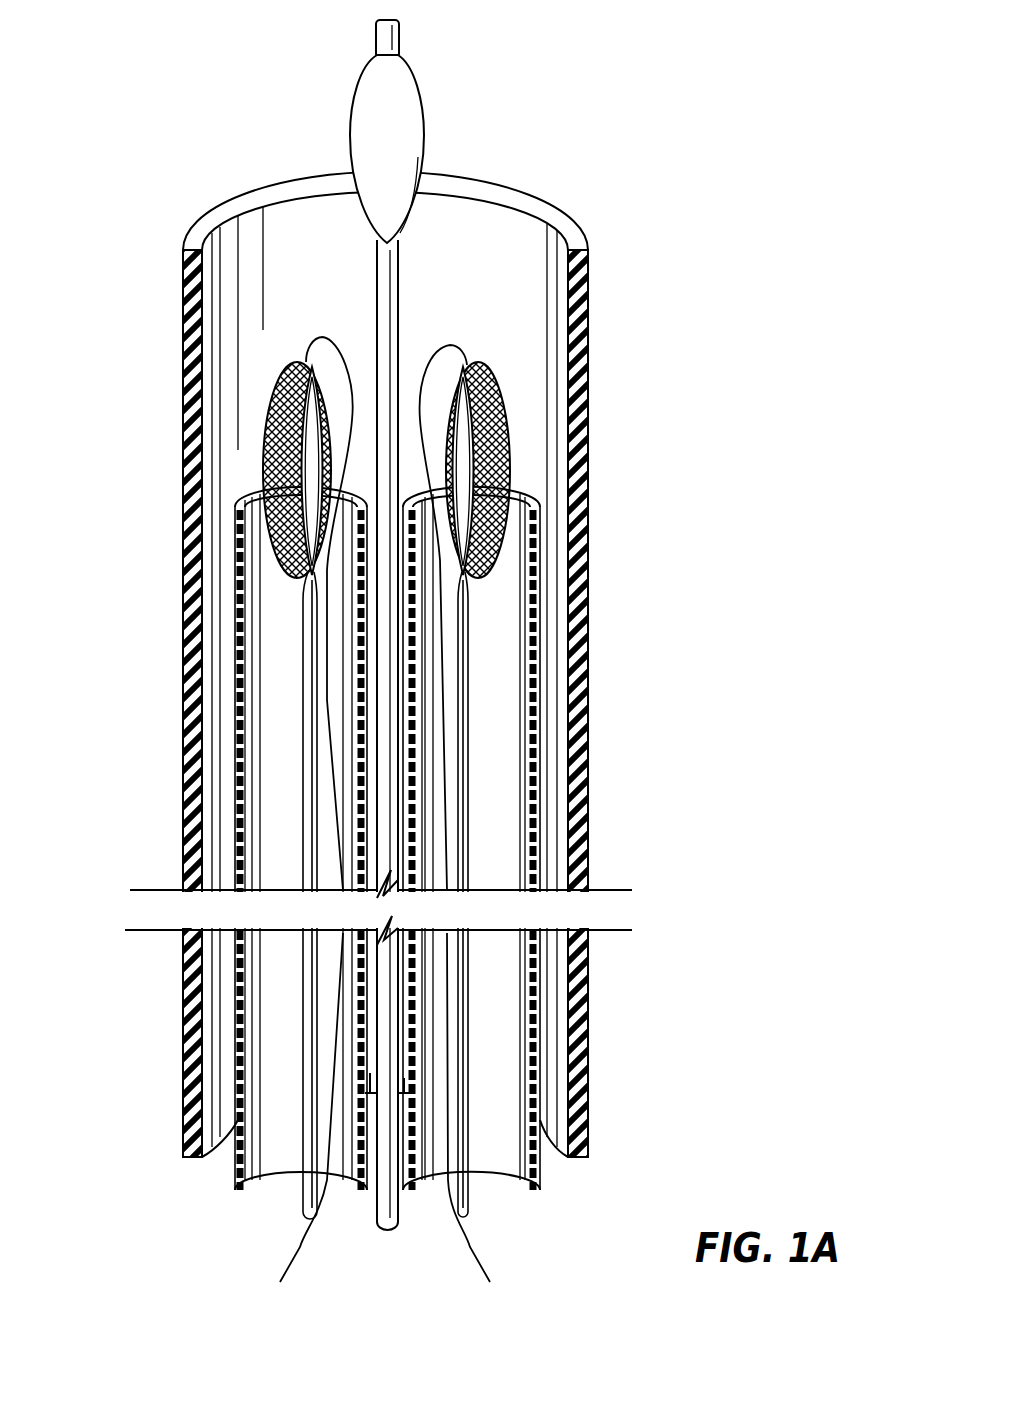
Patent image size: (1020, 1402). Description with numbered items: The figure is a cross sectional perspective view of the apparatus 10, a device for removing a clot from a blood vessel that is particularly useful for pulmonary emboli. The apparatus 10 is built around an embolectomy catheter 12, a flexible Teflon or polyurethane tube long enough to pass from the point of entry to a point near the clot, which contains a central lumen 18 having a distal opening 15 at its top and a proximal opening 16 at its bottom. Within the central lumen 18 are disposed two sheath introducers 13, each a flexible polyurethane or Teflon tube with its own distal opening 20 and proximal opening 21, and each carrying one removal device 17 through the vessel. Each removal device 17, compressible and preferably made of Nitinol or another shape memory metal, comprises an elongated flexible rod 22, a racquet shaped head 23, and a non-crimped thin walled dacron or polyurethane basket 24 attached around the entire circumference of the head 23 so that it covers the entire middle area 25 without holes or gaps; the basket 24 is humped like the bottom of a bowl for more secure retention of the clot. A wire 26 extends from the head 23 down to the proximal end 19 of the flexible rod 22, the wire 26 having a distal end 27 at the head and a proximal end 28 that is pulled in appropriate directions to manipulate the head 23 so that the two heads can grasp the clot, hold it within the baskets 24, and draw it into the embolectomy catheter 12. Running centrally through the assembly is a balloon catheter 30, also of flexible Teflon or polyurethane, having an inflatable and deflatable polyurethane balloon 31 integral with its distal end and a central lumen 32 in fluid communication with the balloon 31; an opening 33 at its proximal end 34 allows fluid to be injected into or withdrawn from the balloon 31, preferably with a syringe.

The apparatus 10 is at (638, 660).
The embolectomy catheter 12 is at (592, 783).
The sheath introducer 13 is at (538, 625).
The distal opening 15 is at (490, 173).
The proximal opening 16 is at (575, 1157).
The removal device 17 is at (512, 568).
The central lumen 18 is at (533, 238).
The proximal end 19 is at (310, 1218).
The distal opening 20 is at (257, 507).
The proximal opening 21 is at (503, 1197).
The elongated flexible rod 22 is at (470, 852).
The racquet shaped head 23 is at (275, 405).
The basket 24 is at (503, 410).
The middle area 25 is at (320, 472).
The wire 26 is at (327, 718).
The distal end 27 is at (308, 357).
The proximal end 28 is at (300, 1247).
The balloon catheter 30 is at (347, 248).
The balloon 31 is at (363, 133).
The central lumen 32 is at (383, 1067).
The opening 33 is at (390, 1235).
The proximal end 34 is at (380, 1233).